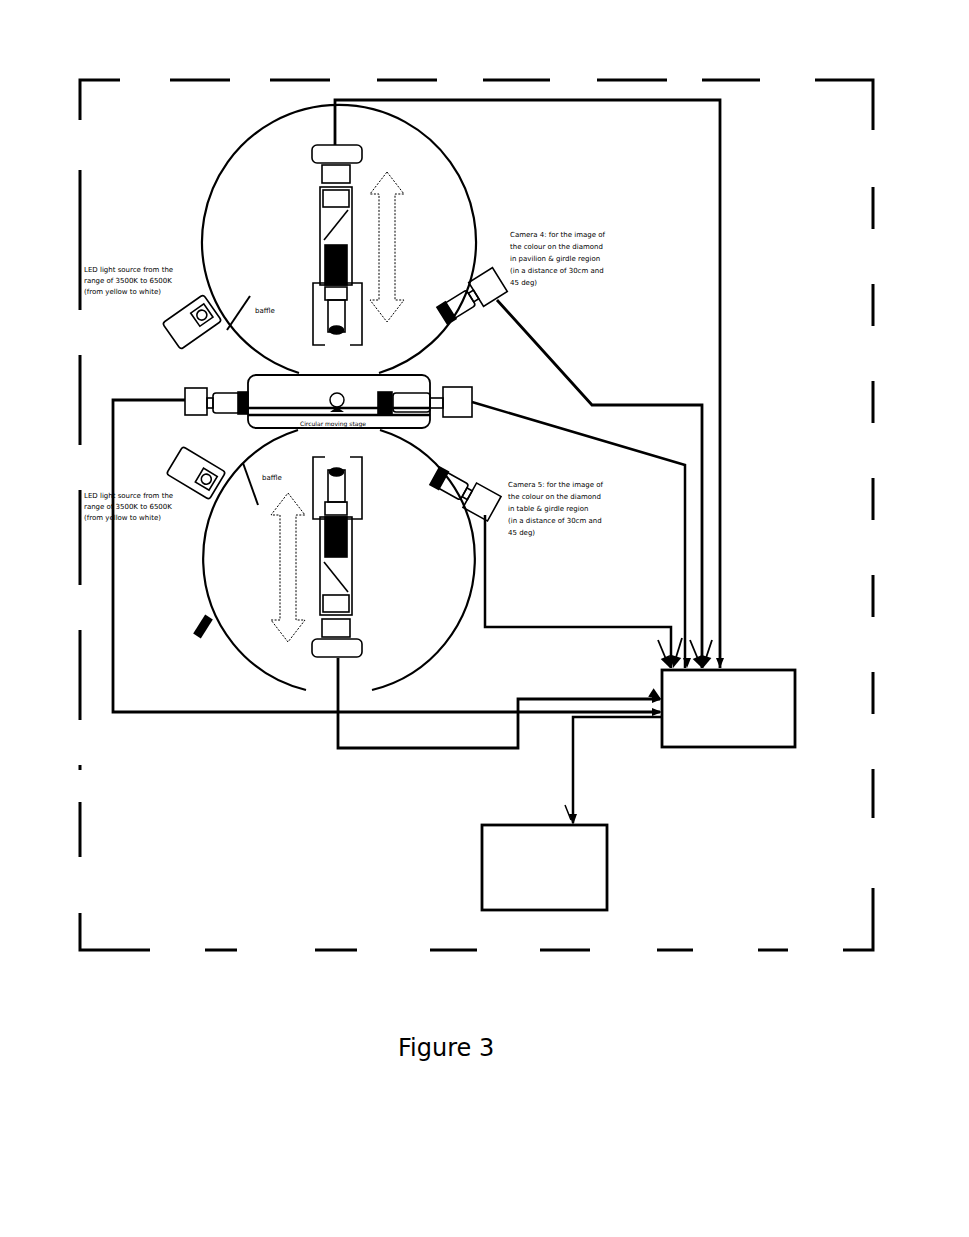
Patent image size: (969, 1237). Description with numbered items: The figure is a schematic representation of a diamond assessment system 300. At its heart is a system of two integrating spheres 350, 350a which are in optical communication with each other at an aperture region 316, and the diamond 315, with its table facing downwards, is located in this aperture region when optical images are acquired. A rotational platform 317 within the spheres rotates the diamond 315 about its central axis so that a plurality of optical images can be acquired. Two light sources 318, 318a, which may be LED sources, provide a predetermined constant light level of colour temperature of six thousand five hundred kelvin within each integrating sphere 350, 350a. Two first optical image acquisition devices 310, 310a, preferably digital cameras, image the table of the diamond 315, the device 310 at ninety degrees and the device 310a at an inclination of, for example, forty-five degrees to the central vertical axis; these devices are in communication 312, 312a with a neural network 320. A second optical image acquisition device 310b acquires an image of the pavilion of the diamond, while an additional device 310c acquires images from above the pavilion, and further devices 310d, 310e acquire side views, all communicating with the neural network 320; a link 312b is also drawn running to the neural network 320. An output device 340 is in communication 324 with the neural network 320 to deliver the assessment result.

The system 300 is at (130, 948).
The first optical image acquisition device 310 is at (320, 650).
The first optical image acquisition device 310a is at (500, 530).
The second optical image acquisition device 310b is at (500, 298).
The additional optical image acquisition device 310c is at (322, 140).
The further optical image acquisition device 310d is at (482, 398).
The further optical image acquisition device 310e is at (176, 416).
The communication 312 is at (452, 755).
The communication 312a is at (565, 627).
The communication link 312b is at (703, 440).
The diamond 315 is at (346, 400).
The aperture region 316 is at (318, 391).
The rotational platform 317 is at (382, 432).
The light source 318 is at (178, 455).
The light source 318a is at (180, 342).
The neural network 320 is at (755, 670).
The communication 324 is at (575, 772).
The output device 340 is at (610, 878).
The integrating sphere 350 is at (447, 640).
The integrating sphere 350a is at (465, 180).